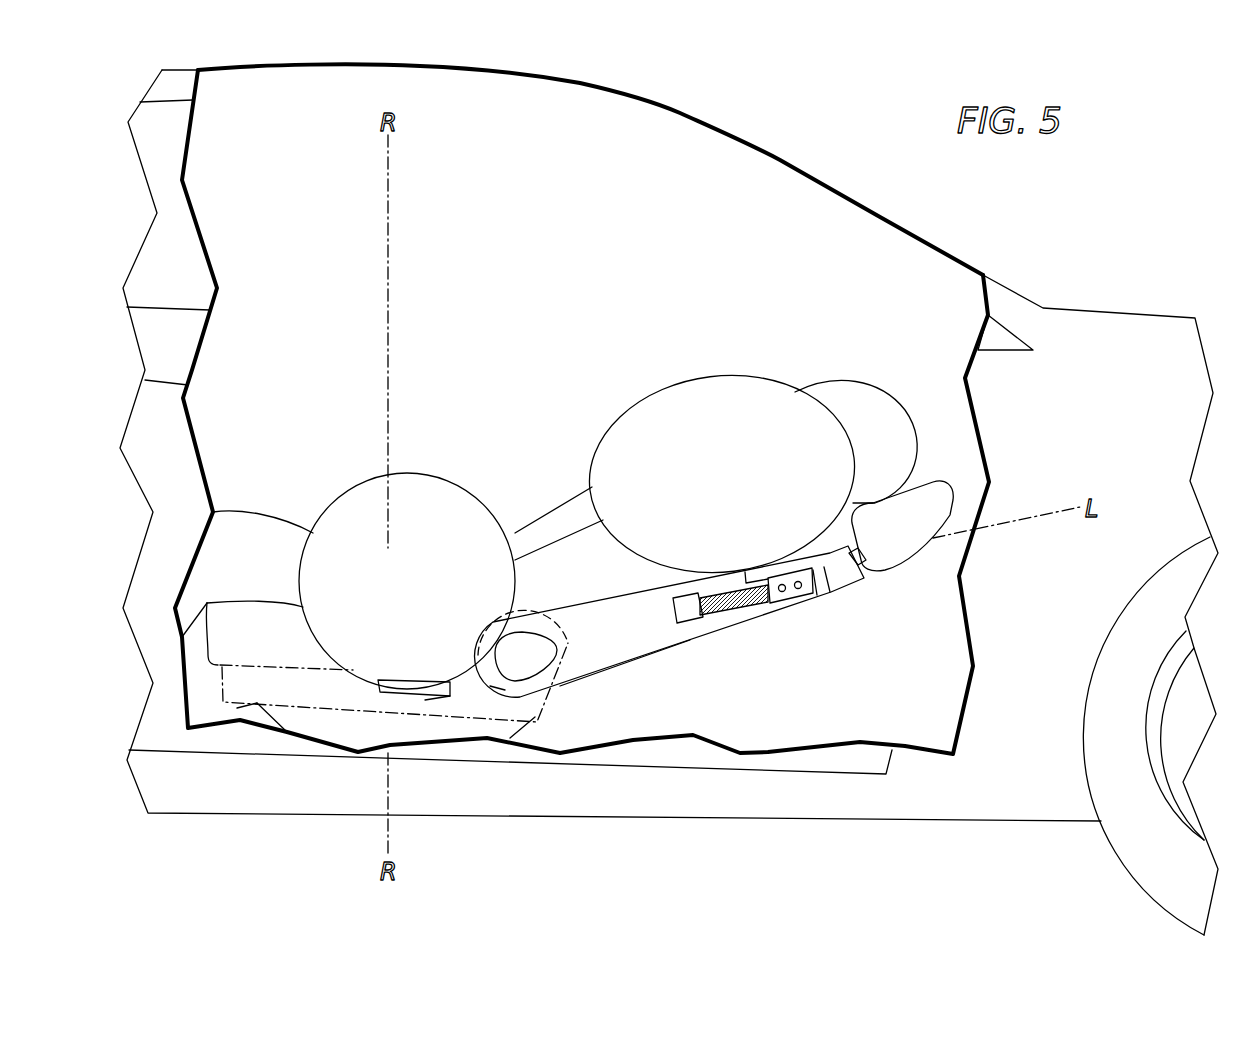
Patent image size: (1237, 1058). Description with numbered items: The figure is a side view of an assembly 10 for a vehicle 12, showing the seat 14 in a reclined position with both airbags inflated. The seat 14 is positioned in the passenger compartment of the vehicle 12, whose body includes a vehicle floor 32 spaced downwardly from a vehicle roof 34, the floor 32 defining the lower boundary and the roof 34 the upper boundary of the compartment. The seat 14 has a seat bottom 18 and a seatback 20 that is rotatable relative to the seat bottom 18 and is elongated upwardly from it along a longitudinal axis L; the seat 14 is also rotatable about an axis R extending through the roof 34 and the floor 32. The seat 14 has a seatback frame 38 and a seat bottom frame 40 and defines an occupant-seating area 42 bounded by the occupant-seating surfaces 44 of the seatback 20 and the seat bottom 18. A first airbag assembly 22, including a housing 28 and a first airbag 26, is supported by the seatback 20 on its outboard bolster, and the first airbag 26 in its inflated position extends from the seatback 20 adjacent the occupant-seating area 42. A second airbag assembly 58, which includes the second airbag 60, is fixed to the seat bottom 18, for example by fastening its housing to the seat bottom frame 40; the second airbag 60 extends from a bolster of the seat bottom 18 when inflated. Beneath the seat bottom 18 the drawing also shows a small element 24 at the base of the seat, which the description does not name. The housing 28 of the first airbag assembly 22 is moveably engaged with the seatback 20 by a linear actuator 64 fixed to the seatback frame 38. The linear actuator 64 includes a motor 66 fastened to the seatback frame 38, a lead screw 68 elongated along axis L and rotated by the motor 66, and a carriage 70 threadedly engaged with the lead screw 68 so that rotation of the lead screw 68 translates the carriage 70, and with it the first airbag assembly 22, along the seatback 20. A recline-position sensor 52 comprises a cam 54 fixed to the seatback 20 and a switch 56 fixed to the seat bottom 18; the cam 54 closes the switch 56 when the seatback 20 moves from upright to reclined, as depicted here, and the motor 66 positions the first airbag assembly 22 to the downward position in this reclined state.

The assembly 10 is at (872, 705).
The vehicle 12 is at (1123, 278).
The seat 14 is at (600, 385).
The seat bottom 18 is at (237, 708).
The seatback 20 is at (643, 657).
The first airbag assembly 22 is at (822, 527).
The mounting bracket 24 is at (393, 693).
The first airbag 26 is at (655, 380).
The housing 28 is at (830, 577).
The vehicle floor 32 is at (712, 712).
The vehicle roof 34 is at (505, 68).
The seatback frame 38 is at (595, 675).
The seat bottom frame 40 is at (288, 708).
The occupant-seating area 42 is at (513, 487).
The occupant-seating surface 44 is at (277, 605).
The recline-position sensor 52 is at (530, 703).
The cam 54 is at (477, 627).
The switch 56 is at (497, 687).
The second airbag assembly 58 is at (425, 703).
The second airbag 60 is at (353, 490).
The linear actuator 64 is at (810, 608).
The motor 66 is at (685, 593).
The lead screw 68 is at (707, 590).
The carriage 70 is at (788, 603).